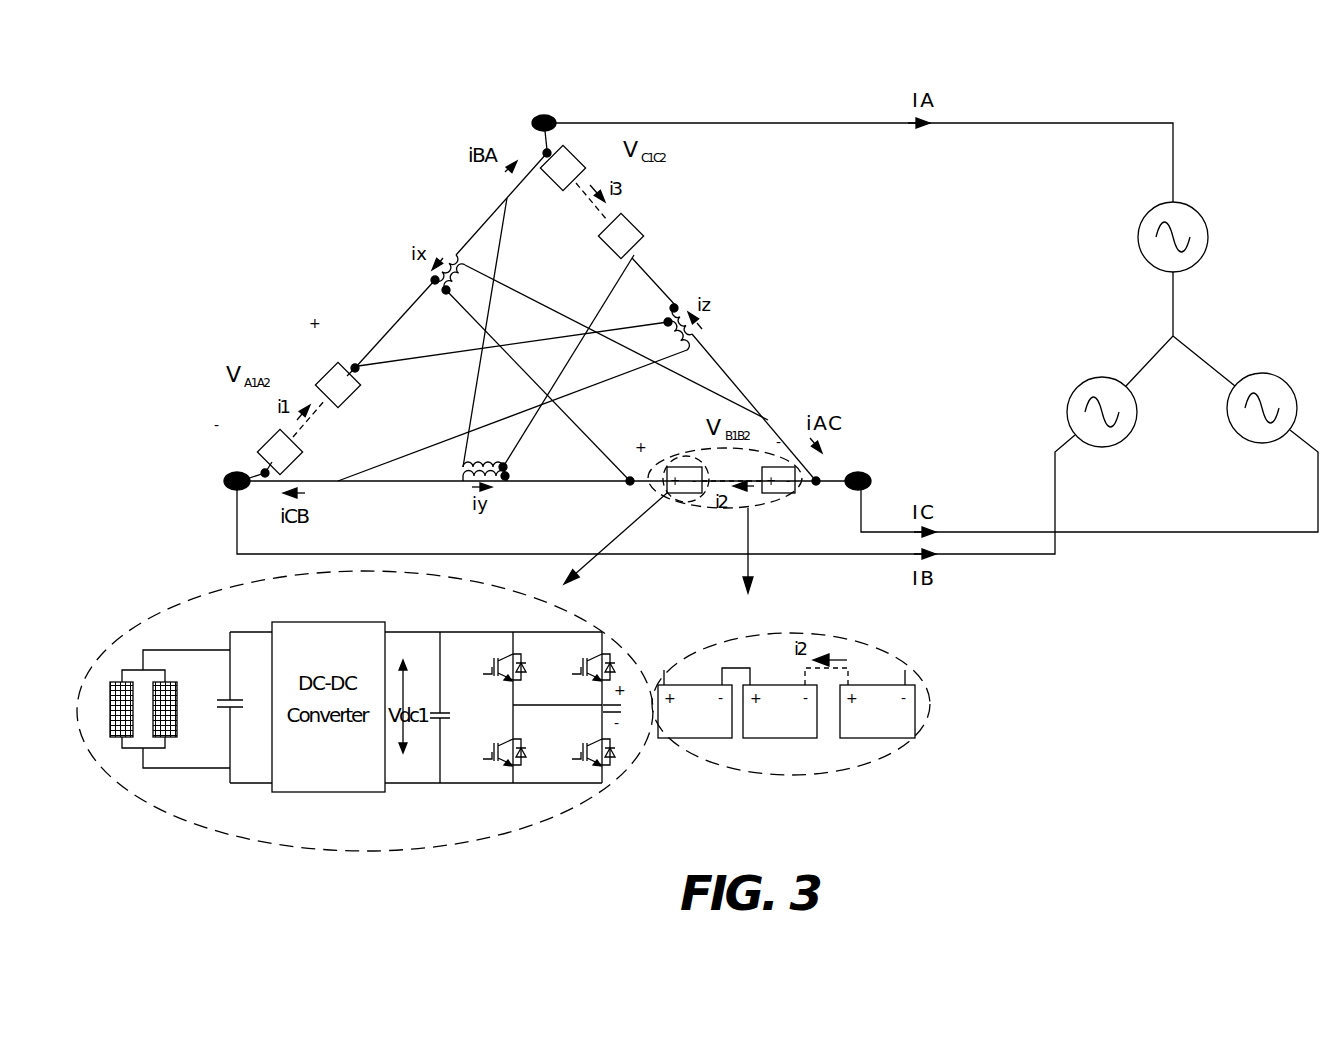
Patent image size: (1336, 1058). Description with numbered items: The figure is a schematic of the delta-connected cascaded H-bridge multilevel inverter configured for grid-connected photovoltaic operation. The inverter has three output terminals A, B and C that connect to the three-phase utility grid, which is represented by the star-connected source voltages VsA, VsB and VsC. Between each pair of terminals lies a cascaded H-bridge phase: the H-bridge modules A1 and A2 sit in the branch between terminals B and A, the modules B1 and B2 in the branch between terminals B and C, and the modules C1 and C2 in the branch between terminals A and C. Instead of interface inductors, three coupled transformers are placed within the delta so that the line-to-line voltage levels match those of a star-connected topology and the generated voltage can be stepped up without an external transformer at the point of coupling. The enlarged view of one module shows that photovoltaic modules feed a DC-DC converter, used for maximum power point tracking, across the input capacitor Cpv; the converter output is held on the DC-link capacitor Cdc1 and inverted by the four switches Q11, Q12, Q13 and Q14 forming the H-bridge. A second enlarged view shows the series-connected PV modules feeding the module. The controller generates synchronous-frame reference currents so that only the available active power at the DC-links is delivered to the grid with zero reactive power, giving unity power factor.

The phase A terminal node A is at (544, 112).
The phase B terminal node B is at (229, 478).
The phase C terminal node C is at (858, 467).
The converter module A1 is at (339, 375).
The converter module A2 is at (268, 453).
The battery module terminal B1 is at (625, 496).
The battery module terminal B2 is at (822, 498).
The converter module C1 is at (637, 236).
The converter module C2 is at (566, 156).
The switch Q11 is at (489, 666).
The switch Q12 is at (577, 666).
The switch Q13 is at (489, 751).
The switch Q14 is at (577, 751).
The PV-side capacitor Cpv is at (211, 702).
The DC-link capacitor Cdc1 is at (460, 707).
The phase A source voltage VsA is at (1197, 234).
The phase B source voltage VsB is at (1087, 404).
The phase C source voltage VsC is at (1272, 396).